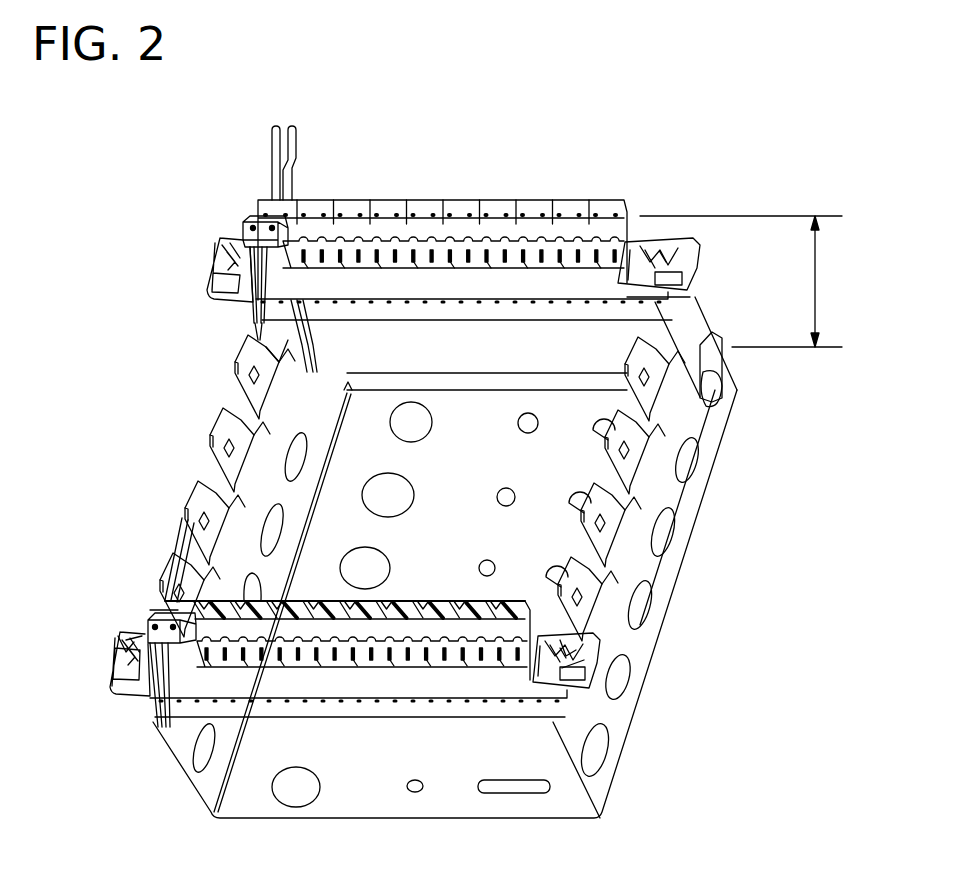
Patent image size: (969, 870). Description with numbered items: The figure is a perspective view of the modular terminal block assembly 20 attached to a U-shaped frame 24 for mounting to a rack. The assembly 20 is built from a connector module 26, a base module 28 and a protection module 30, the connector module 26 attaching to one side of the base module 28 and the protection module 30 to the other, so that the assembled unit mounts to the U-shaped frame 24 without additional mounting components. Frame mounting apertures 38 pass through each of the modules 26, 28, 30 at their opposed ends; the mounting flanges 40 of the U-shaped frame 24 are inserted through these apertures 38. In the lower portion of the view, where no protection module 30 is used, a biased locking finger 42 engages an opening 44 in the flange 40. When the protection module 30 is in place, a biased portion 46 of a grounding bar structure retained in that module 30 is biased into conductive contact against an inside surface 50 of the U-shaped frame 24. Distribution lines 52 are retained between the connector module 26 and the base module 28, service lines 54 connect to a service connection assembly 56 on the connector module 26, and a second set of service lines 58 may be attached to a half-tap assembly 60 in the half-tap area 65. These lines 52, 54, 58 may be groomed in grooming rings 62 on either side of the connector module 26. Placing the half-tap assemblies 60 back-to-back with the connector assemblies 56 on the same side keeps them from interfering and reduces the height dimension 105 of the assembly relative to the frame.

The modular terminal block assembly 20 is at (118, 232).
The U-shaped frame 24 is at (190, 460).
The connector module 26 is at (385, 290).
The base module 28 is at (468, 318).
The protection module 30 is at (350, 400).
The frame mounting apertures 38 is at (655, 242).
The mounting flange 40 is at (130, 640).
The biased locking finger 42 is at (138, 625).
The opening 44 is at (585, 597).
The biased portion 46 is at (716, 376).
The inside surface 50 is at (285, 400).
The distribution lines 52 is at (282, 358).
The service lines 54 is at (289, 130).
The service connection assembly 56 is at (258, 203).
The second set of service lines 58 is at (253, 310).
The half-tap assembly 60 is at (232, 228).
The grooming rings 62 is at (210, 262).
The half-tap area 65 is at (500, 253).
The height dimension 105 is at (760, 281).